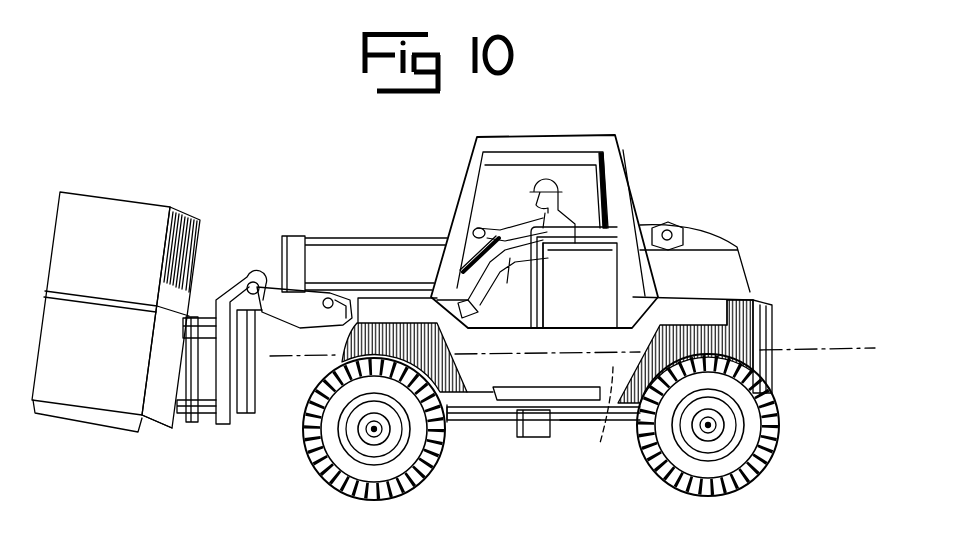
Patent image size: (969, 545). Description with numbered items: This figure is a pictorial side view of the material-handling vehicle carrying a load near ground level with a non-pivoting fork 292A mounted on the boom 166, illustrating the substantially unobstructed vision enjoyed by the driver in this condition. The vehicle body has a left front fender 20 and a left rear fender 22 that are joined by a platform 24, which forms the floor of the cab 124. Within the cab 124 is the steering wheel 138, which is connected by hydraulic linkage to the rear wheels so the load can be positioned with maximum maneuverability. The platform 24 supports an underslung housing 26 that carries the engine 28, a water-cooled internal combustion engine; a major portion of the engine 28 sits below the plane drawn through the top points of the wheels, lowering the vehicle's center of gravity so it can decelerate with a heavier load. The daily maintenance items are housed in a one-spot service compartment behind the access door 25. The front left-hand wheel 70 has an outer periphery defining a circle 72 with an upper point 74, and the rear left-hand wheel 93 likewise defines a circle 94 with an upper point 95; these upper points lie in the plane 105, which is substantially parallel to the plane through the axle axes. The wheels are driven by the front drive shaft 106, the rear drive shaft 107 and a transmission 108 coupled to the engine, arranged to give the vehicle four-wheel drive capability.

The cab 124 is at (604, 126).
The steering wheel 138 is at (472, 226).
The boom 166 is at (358, 238).
The access door 25 is at (603, 248).
The platform 24 is at (563, 324).
The left rear fender 22 is at (723, 300).
The plane 105 is at (803, 347).
The left front fender 20 is at (350, 327).
The upper point 74 is at (382, 357).
The circle 72 is at (303, 443).
The front left-hand wheel 70 is at (348, 430).
The underslung housing 26 is at (493, 421).
The front drive shaft 106 is at (448, 427).
The transmission 108 is at (533, 440).
The rear drive shaft 107 is at (577, 428).
The engine 28 is at (593, 417).
The circle 94 is at (778, 437).
The rear left-hand wheel 93 is at (739, 431).
The upper point 95 is at (706, 350).
The non-pivoting fork 292A is at (183, 420).